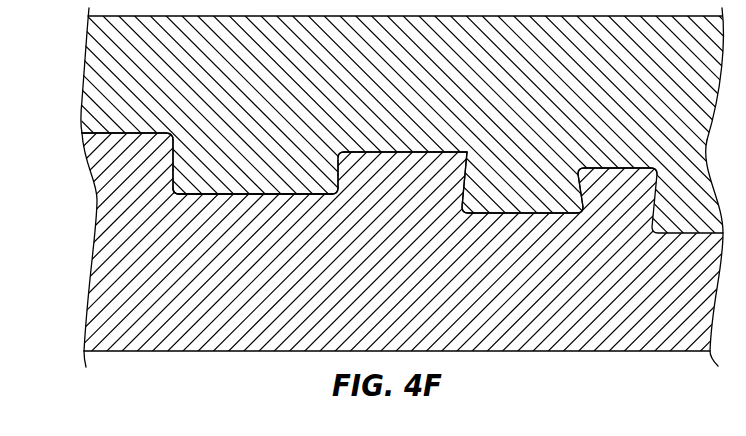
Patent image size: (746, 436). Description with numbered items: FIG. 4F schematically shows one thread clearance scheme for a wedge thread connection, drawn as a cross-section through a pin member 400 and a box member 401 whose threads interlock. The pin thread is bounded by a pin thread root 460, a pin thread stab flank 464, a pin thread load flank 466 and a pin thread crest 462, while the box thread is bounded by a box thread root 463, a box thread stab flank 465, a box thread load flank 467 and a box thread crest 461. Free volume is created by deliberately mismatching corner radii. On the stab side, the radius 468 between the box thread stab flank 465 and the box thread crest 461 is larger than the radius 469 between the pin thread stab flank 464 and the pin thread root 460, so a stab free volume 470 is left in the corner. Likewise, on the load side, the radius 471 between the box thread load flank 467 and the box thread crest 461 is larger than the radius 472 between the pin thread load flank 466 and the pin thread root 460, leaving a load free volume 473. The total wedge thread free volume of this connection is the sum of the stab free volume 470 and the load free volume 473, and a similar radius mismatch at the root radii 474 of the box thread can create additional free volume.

The substrate 400 is at (484, 277).
The overlying layer 401 is at (532, 83).
The pin thread root 460 is at (250, 197).
The box thread crest 461 is at (293, 190).
The pin thread crest 462 is at (417, 152).
The box thread root 463 is at (410, 151).
The pin thread stab flank 464 is at (168, 166).
The box thread stab flank 465 is at (172, 163).
The pin thread load flank 466 is at (340, 190).
The box thread load flank 467 is at (343, 167).
The radius between box thread stab flank and box thread crest 468 is at (173, 181).
The radius between pin thread stab flank and pin thread root 469 is at (170, 193).
The stab free volume 470 is at (174, 197).
The radius between box thread load flank and box thread crest 471 is at (330, 186).
The radius between pin thread load flank and pin thread root 472 is at (340, 192).
The load free volume 473 is at (338, 196).
The root radii of the box thread 474 is at (469, 152).